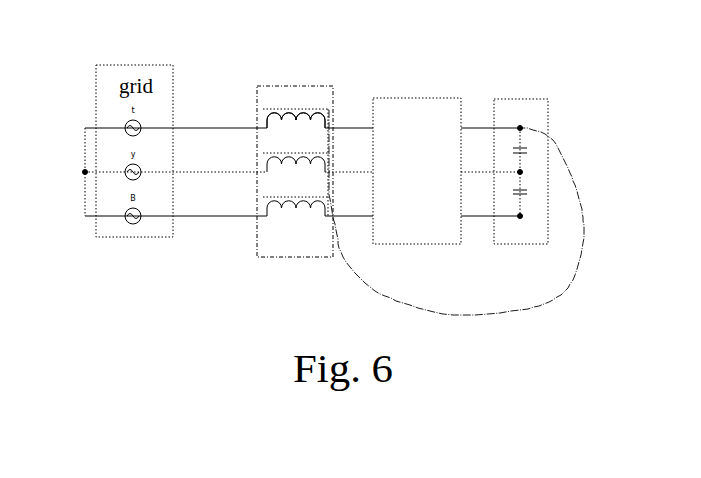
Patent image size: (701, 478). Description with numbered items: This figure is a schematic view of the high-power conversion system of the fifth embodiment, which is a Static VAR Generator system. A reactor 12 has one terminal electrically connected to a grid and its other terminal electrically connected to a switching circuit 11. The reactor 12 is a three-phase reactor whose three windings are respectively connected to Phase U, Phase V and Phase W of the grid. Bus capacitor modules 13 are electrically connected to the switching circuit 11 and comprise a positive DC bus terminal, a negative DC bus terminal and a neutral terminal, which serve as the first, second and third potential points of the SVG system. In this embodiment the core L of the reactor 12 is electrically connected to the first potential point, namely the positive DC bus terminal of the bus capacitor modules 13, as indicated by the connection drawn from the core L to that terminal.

The switching circuit 11 is at (430, 97).
The reactor 12 is at (273, 113).
The bus capacitor modules 13 is at (541, 99).
The core L is at (329, 111).